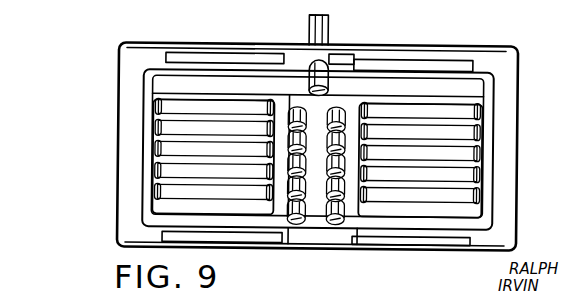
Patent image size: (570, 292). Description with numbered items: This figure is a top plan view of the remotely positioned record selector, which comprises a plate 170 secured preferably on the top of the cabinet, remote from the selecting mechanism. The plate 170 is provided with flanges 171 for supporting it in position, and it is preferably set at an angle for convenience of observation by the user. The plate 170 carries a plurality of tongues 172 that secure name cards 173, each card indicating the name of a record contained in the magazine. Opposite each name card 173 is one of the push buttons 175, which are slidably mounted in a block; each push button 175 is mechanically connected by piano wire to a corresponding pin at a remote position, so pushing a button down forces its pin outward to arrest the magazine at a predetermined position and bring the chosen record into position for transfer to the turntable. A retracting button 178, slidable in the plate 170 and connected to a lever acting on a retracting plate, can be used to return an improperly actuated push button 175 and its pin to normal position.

The plate 170 is at (318, 230).
The flanges 171 is at (513, 160).
The tongues 172 is at (157, 146).
The name cards 173 is at (181, 190).
The push buttons 175 is at (295, 225).
The retracting button 178 is at (320, 73).